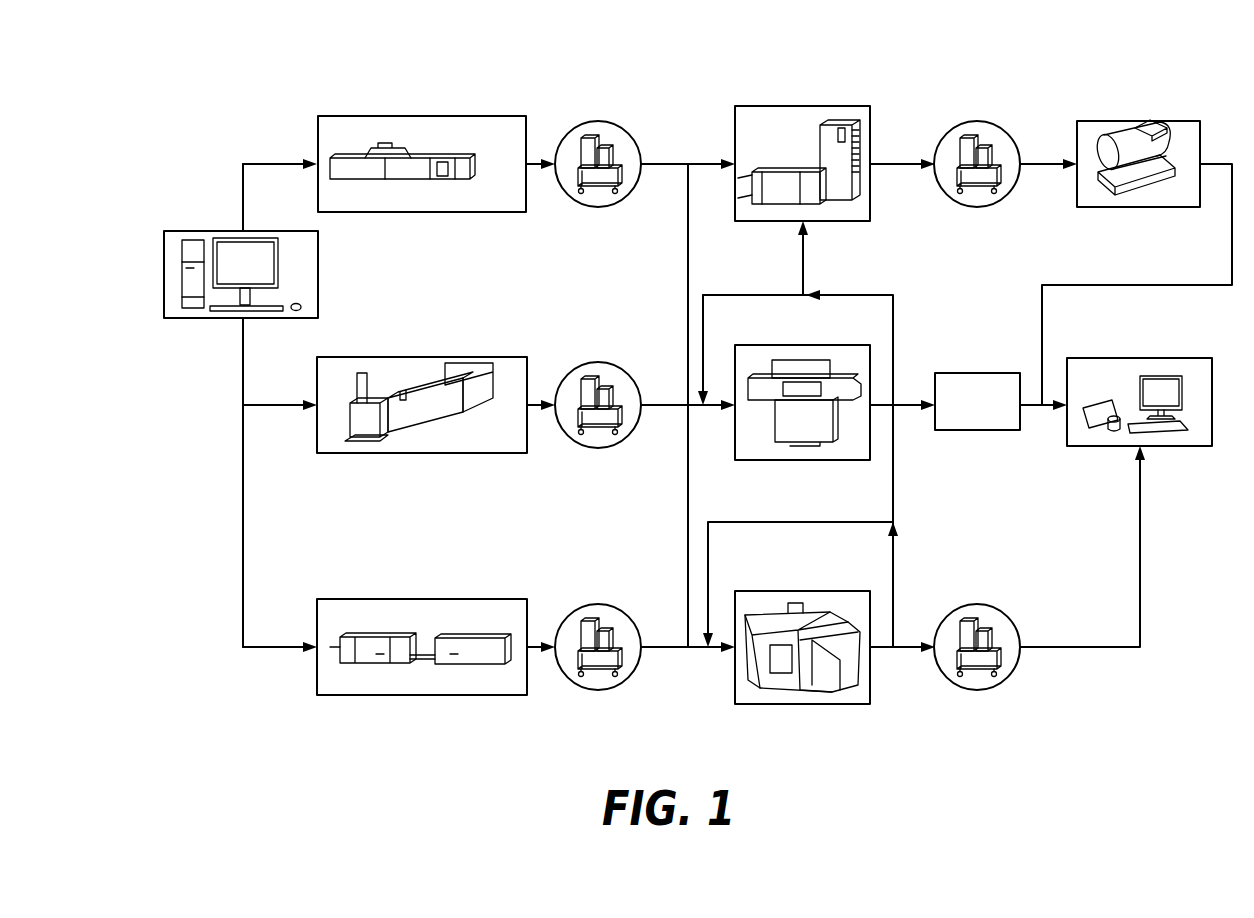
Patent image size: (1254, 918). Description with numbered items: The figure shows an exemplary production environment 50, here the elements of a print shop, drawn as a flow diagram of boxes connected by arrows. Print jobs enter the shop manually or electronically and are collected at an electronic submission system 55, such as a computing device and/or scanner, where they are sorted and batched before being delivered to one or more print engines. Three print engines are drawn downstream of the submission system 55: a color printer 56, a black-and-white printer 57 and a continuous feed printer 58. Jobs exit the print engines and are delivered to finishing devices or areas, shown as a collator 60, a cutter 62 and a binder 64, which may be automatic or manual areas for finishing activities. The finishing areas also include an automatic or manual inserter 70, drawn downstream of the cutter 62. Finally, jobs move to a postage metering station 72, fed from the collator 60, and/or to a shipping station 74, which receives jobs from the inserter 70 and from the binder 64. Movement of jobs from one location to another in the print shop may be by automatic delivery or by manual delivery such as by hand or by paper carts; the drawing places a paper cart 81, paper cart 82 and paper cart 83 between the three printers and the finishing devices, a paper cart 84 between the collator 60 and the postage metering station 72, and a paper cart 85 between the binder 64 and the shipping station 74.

The production environment 50 is at (264, 97).
The electronic submission system 55 is at (193, 322).
The color printer 56 is at (440, 212).
The black-and-white printer 57 is at (440, 453).
The continuous feed printer 58 is at (440, 695).
The collator 60 is at (812, 222).
The cutter 62 is at (812, 460).
The binder 64 is at (812, 705).
The inserter 70 is at (975, 430).
The postage metering station 72 is at (1133, 207).
The shipping station 74 is at (1167, 446).
The paper cart 81 is at (598, 207).
The paper cart 82 is at (598, 448).
The paper cart 83 is at (598, 690).
The paper cart 84 is at (977, 207).
The paper cart 85 is at (977, 690).